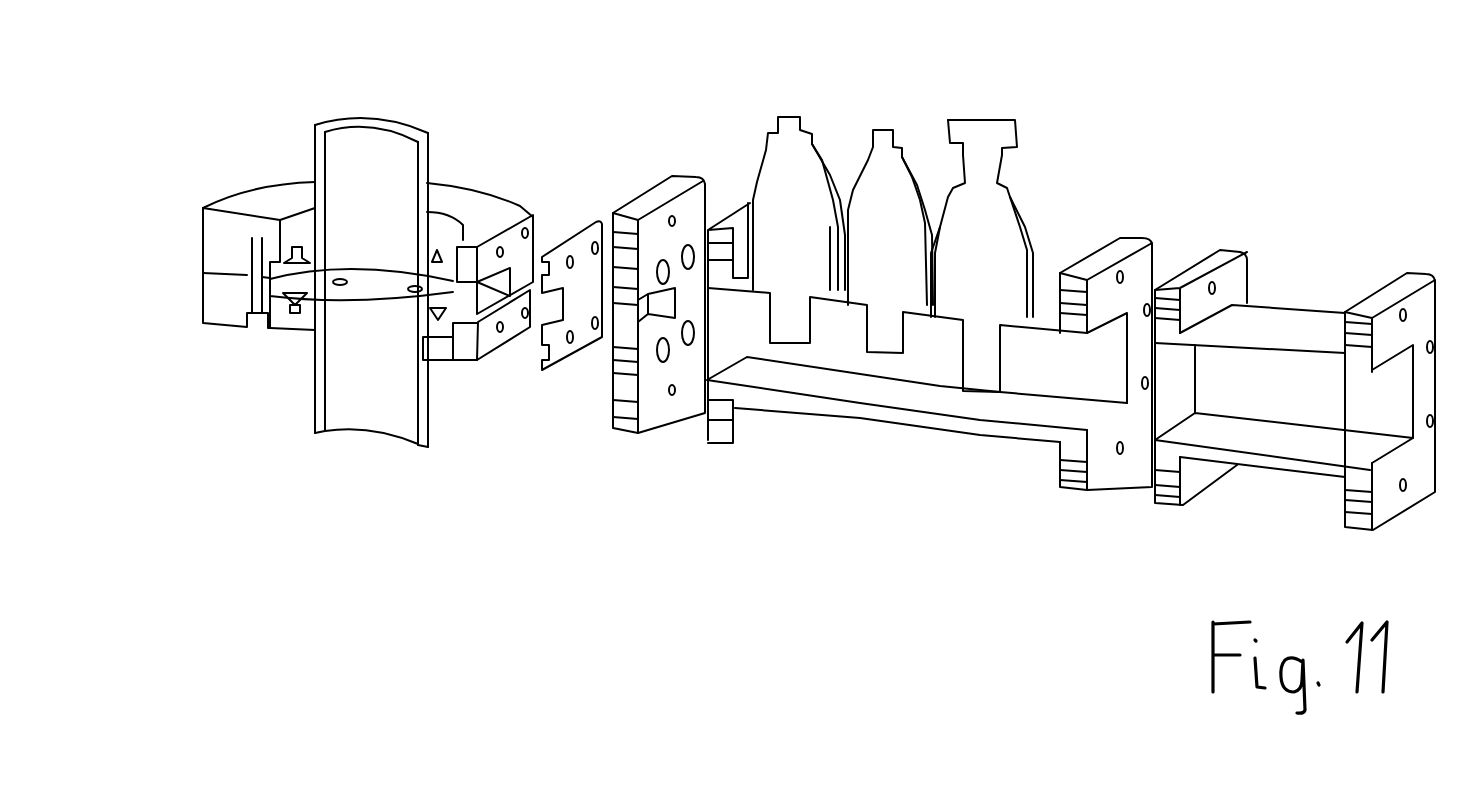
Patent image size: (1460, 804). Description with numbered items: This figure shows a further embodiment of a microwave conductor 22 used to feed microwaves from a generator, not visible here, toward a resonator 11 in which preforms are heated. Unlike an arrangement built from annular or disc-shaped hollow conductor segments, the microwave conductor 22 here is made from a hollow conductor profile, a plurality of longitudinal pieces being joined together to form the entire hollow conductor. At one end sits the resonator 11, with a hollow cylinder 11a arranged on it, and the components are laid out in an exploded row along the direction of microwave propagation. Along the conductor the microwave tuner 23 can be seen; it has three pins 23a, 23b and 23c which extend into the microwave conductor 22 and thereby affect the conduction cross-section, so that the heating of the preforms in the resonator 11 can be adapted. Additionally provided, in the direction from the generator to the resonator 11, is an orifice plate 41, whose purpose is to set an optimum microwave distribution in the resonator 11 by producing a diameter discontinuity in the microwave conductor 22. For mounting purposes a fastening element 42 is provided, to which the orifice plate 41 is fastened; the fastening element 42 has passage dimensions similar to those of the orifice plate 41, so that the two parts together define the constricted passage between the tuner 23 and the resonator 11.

The resonator 11 is at (228, 231).
The hollow cylinder 11a is at (318, 183).
The orifice plate 41 is at (578, 235).
The fastening element 42 is at (658, 220).
The microwave tuner 23 is at (902, 97).
The tuning pin 23a is at (792, 322).
The tuning pin 23b is at (882, 333).
The tuning pin 23c is at (985, 368).
The microwave conductor 22 is at (1323, 216).